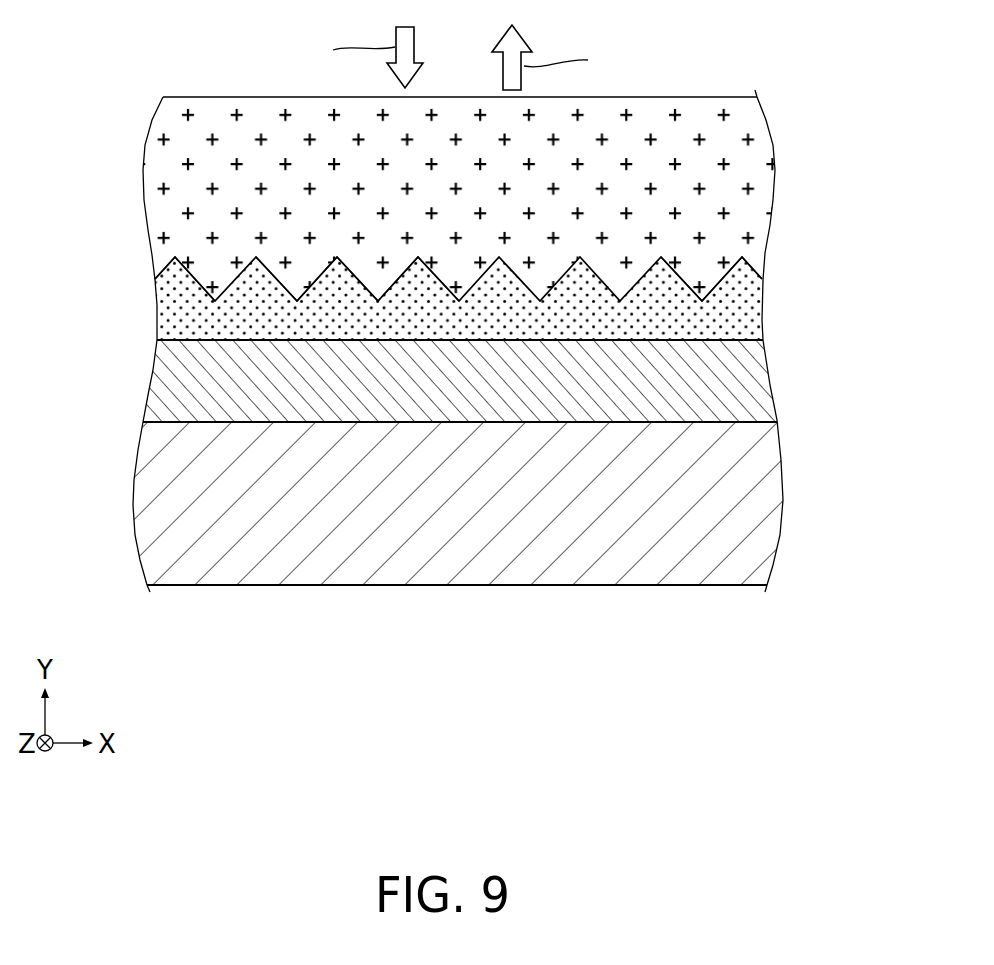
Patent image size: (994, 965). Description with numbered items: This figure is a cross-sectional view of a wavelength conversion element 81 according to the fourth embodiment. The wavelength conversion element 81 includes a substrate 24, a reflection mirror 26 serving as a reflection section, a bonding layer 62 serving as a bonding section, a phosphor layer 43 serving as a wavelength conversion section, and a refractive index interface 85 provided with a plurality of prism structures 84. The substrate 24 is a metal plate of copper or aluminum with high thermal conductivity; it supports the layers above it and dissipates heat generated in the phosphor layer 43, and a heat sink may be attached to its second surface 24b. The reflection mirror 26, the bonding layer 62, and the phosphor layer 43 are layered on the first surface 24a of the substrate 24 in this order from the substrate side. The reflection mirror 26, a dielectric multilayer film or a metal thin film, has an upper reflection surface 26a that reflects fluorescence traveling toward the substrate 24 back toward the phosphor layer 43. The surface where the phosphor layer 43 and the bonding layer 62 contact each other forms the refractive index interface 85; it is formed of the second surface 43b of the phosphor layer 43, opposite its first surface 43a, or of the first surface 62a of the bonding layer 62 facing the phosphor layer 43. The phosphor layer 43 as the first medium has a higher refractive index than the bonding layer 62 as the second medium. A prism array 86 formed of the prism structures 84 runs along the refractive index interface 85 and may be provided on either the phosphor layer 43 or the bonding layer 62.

The wavelength conversion element 81 is at (455, 336).
The phosphor layer 43 is at (753, 152).
The first surface of the phosphor layer 43a is at (687, 97).
The second surface of the phosphor layer 43b is at (723, 280).
The bonding layer 62 is at (461, 444).
The first surface of the bonding layer 62a is at (690, 273).
The reflection mirror 26 is at (456, 364).
The reflection surface 26a is at (200, 340).
The substrate 24 is at (455, 507).
The first surface of the substrate 24a is at (158, 420).
The second surface of the substrate 24b is at (182, 585).
The refractive index interface 85 is at (172, 291).
The prism structures 84 is at (409, 293).
The prism array 86 is at (369, 457).